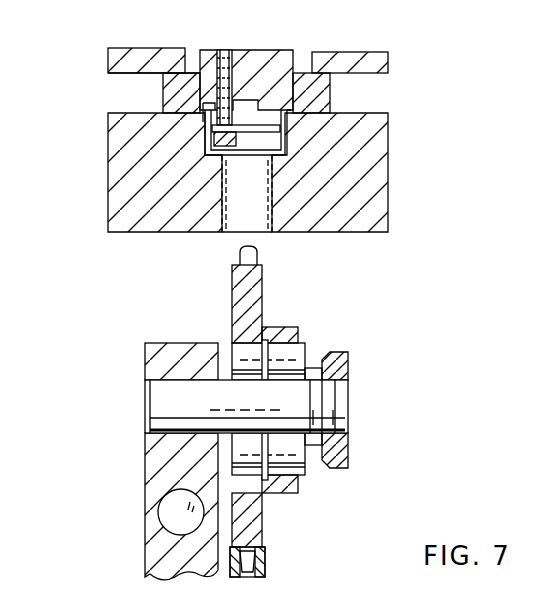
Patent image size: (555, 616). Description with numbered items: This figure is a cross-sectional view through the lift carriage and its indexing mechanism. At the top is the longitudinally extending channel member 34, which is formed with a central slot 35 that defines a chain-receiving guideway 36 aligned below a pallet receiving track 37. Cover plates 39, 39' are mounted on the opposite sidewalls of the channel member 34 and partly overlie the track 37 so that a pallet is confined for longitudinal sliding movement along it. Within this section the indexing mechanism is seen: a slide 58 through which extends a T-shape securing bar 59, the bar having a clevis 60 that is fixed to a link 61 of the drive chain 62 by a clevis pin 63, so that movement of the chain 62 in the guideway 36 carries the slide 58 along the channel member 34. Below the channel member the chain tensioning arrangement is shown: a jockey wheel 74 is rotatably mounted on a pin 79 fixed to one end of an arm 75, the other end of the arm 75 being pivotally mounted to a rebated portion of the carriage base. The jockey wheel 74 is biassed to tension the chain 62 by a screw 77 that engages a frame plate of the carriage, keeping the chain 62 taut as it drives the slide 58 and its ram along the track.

The channel member 34 is at (120, 191).
The central slot 35 is at (272, 230).
The chain-receiving guideway 36 is at (283, 152).
The pallet receiving track 37 is at (288, 112).
The cover plate 39 is at (383, 61).
The cover plate 39' is at (117, 56).
The slide 58 is at (317, 97).
The T-shape securing bar 59 is at (283, 52).
The clevis 60 is at (212, 165).
The link 61 is at (265, 168).
The drive chain 62 is at (270, 565).
The clevis pin 63 is at (213, 132).
The jockey wheel 74 is at (245, 292).
The arm 75 is at (155, 470).
The screw 77 is at (173, 522).
The pin 79 is at (167, 400).